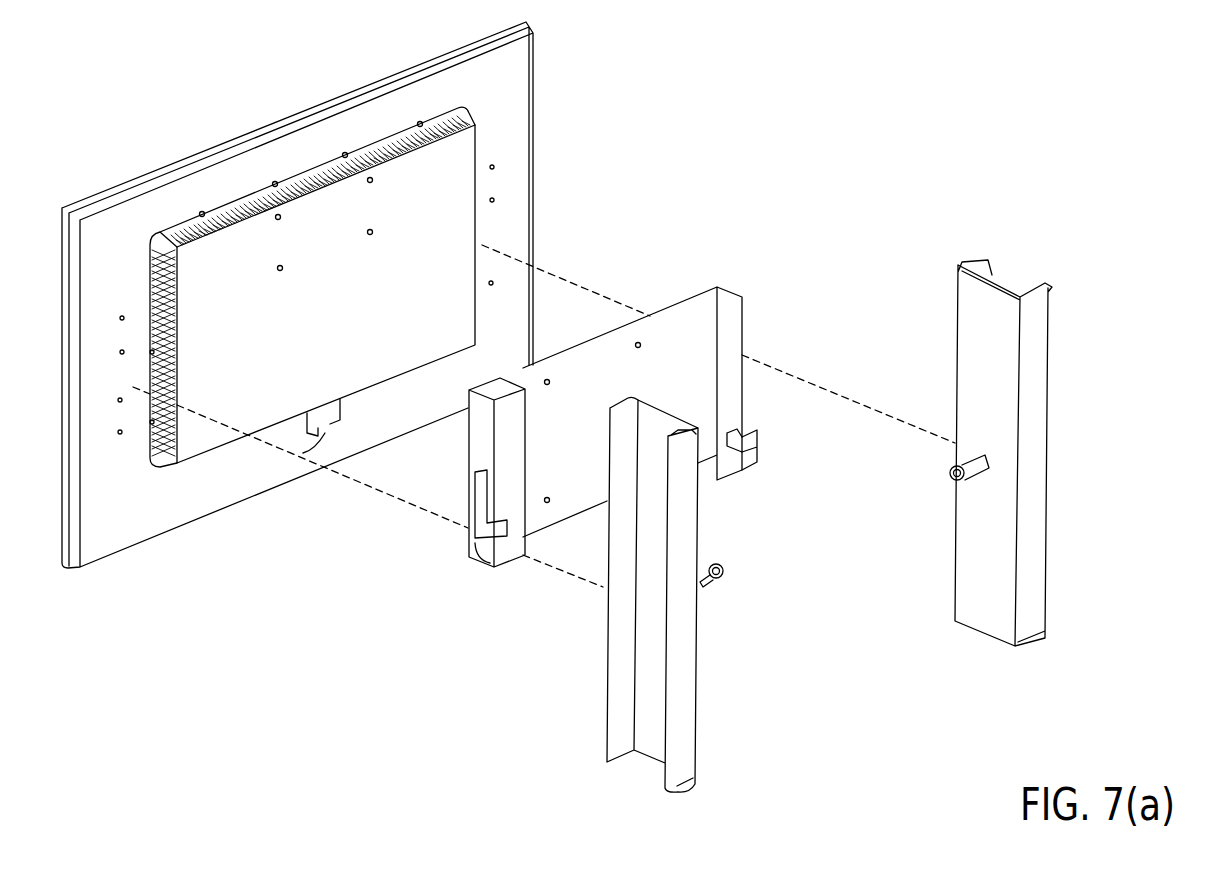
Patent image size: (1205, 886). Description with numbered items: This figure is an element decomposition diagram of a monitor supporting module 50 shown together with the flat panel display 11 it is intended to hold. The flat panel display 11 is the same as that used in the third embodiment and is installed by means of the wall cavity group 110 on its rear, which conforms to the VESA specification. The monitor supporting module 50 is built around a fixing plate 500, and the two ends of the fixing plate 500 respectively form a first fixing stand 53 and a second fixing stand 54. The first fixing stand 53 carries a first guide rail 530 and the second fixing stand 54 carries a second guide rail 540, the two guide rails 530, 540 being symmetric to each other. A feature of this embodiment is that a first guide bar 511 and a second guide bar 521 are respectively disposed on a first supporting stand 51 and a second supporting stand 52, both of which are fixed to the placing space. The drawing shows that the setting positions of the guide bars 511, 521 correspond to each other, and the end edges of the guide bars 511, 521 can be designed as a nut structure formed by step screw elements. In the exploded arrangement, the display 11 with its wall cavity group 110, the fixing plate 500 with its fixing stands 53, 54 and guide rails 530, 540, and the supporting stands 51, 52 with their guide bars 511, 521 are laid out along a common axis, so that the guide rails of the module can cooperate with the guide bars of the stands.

The flat panel display 11 is at (410, 70).
The wall cavity group 110 is at (293, 218).
The monitor supporting module 50 is at (873, 268).
The fixing plate 500 is at (675, 348).
The first fixing stand 53 is at (742, 444).
The first guide rail 530 is at (742, 426).
The second fixing stand 54 is at (503, 553).
The second guide rail 540 is at (490, 550).
The second supporting stand 52 is at (693, 781).
The second guide bar 521 is at (714, 586).
The first supporting stand 51 is at (1043, 645).
The first guide bar 511 is at (983, 470).